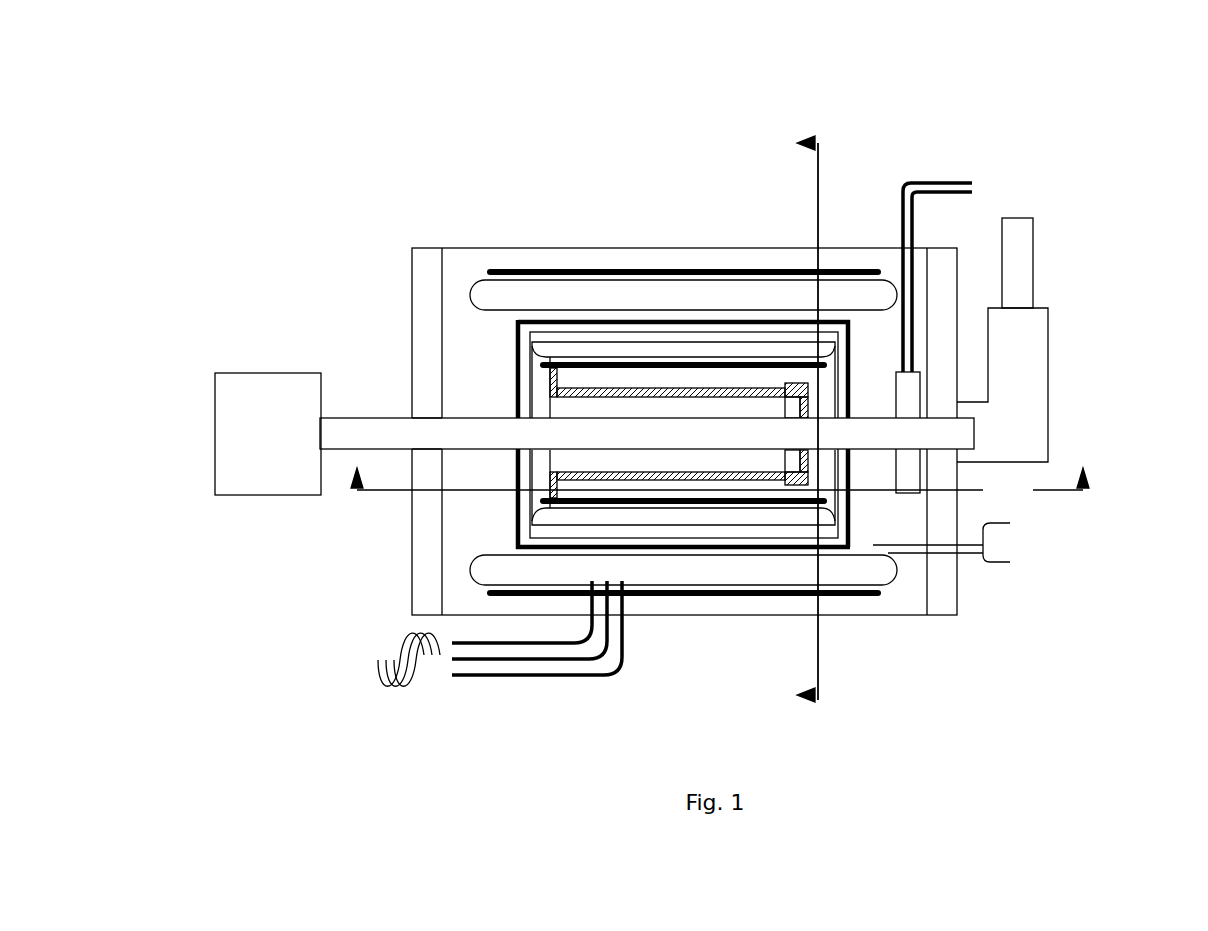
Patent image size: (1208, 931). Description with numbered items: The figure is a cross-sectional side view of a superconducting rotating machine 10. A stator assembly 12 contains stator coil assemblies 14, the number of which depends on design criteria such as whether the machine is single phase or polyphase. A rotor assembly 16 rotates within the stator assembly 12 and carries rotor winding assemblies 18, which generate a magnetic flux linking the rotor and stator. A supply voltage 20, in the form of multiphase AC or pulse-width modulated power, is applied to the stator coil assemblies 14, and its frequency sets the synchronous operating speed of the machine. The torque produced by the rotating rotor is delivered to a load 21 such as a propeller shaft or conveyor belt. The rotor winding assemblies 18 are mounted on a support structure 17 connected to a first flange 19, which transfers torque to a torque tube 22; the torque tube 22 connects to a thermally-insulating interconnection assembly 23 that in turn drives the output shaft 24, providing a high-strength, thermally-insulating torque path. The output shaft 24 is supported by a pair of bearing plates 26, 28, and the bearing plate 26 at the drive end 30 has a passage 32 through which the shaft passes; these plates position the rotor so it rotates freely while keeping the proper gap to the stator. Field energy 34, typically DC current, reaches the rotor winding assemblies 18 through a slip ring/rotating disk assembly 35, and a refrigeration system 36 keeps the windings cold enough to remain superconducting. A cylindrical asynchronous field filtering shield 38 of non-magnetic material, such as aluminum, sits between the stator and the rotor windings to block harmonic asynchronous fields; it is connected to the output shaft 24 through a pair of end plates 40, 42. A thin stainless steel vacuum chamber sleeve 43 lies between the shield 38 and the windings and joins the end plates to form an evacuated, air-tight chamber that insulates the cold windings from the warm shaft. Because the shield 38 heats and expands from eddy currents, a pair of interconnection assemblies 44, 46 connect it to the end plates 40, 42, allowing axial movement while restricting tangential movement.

The superconducting rotating machine 10 is at (120, 65).
The stator assembly 12 is at (597, 255).
The stator coil assemblies 14 is at (677, 297).
The rotor assembly 16 is at (658, 517).
The support structure 17 is at (690, 497).
The rotor winding assemblies 18 is at (645, 600).
The first flange 19 is at (557, 382).
The supply voltage 20 is at (372, 670).
The load 21 is at (300, 373).
The torque tube 22 is at (650, 355).
The thermally-insulating interconnection assembly 23 is at (793, 383).
The output shaft 24 is at (348, 417).
The bearing plate 26 is at (425, 250).
The bearing plate 28 is at (957, 587).
The drive end 30 is at (335, 158).
The passage 32 is at (427, 428).
The field energy 34 is at (992, 165).
The slip ring/rotating disk assembly 35 is at (906, 495).
The refrigeration system 36 is at (1052, 390).
The asynchronous field filtering shield 38 is at (833, 550).
The end plate 40 is at (517, 395).
The end plate 42 is at (850, 345).
The vacuum chamber sleeve 43 is at (540, 330).
The interconnection assembly 44 is at (459, 250).
The interconnection assembly 46 is at (850, 325).